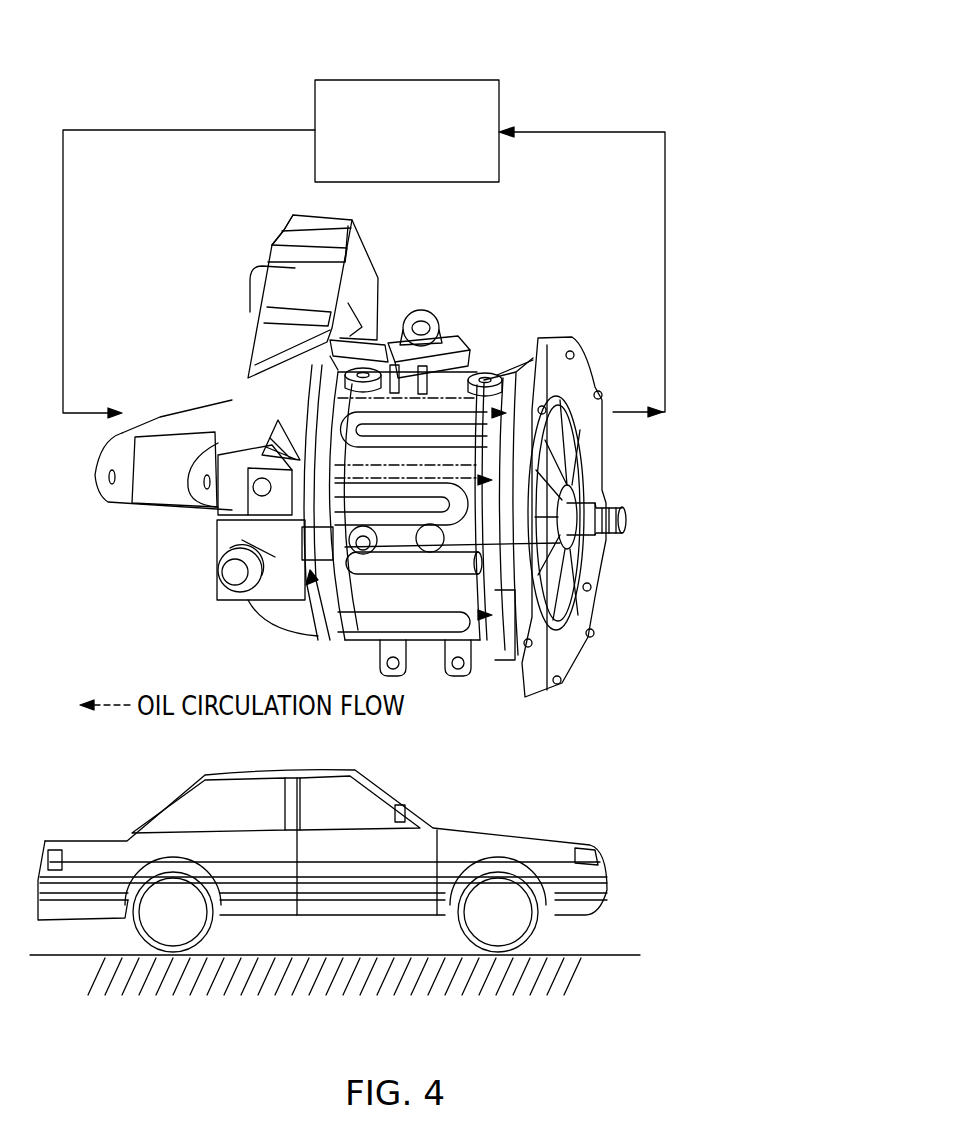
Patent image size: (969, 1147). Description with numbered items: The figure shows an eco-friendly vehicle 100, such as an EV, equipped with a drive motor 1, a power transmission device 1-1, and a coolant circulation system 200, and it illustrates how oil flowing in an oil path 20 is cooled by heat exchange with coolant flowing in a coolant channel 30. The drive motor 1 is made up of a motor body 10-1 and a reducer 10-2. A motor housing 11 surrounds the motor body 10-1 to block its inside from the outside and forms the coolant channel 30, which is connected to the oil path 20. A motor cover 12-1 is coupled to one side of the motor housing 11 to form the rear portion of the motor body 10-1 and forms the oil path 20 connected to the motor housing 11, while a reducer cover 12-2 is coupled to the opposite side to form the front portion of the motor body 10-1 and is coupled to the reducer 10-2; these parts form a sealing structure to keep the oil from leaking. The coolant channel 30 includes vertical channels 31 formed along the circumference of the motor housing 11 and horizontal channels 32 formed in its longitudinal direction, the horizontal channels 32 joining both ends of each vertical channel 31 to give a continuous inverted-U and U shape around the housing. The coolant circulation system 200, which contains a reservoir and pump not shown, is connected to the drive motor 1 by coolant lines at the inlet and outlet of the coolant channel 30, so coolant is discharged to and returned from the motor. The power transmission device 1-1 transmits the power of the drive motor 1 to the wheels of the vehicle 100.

The drive motor 1 is at (516, 266).
The power transmission device 1-1 is at (517, 897).
The motor body 10-1 is at (268, 340).
The reducer 10-2 is at (577, 455).
The motor housing 11 is at (457, 378).
The motor cover 12-1 is at (487, 622).
The reducer cover 12-2 is at (265, 540).
The oil path 20 is at (587, 510).
The coolant channel 30 is at (158, 335).
The vertical channels 31 is at (280, 398).
The horizontal channels 32 is at (285, 440).
The eco-friendly vehicle 100 is at (155, 808).
The coolant circulation system 200 is at (405, 80).